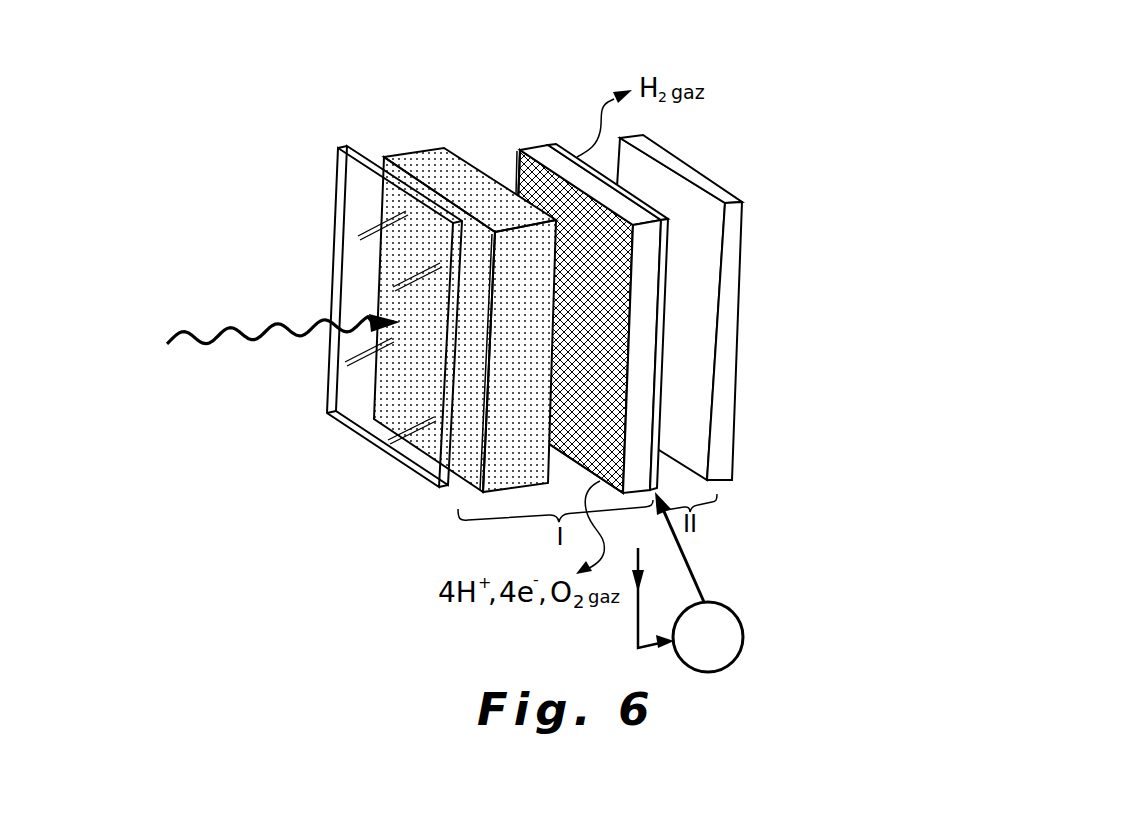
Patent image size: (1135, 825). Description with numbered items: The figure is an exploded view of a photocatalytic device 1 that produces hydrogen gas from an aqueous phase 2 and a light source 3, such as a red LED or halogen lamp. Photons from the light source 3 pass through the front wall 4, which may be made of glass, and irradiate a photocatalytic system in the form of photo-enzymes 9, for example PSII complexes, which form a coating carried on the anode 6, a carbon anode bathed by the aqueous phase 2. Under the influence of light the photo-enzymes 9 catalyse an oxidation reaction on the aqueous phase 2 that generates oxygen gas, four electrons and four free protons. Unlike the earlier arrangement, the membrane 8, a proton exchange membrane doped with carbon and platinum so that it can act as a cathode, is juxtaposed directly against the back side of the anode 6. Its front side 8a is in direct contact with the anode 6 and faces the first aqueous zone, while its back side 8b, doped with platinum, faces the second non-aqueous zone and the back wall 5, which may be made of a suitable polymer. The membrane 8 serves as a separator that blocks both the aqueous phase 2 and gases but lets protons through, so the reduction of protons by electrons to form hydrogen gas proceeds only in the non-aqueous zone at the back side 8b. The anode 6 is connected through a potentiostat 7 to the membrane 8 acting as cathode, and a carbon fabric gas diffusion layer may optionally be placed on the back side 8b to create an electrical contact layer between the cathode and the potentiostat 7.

The device 1 is at (345, 121).
The aqueous phase 2 is at (442, 162).
The light source 3 is at (283, 319).
The front wall 4 is at (360, 215).
The back wall 5 is at (733, 197).
The anode 6 is at (540, 155).
The potentiostat 7 is at (730, 662).
The membrane 8 is at (560, 147).
The front side 8a is at (656, 295).
The back side 8b is at (665, 317).
The photo-enzymes 9 is at (517, 158).